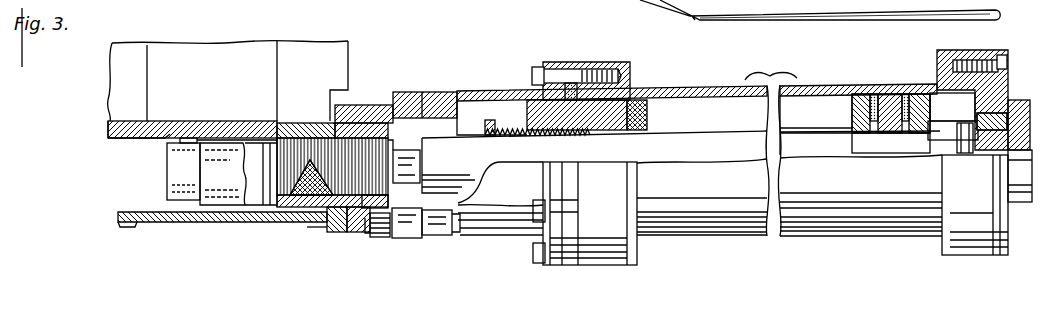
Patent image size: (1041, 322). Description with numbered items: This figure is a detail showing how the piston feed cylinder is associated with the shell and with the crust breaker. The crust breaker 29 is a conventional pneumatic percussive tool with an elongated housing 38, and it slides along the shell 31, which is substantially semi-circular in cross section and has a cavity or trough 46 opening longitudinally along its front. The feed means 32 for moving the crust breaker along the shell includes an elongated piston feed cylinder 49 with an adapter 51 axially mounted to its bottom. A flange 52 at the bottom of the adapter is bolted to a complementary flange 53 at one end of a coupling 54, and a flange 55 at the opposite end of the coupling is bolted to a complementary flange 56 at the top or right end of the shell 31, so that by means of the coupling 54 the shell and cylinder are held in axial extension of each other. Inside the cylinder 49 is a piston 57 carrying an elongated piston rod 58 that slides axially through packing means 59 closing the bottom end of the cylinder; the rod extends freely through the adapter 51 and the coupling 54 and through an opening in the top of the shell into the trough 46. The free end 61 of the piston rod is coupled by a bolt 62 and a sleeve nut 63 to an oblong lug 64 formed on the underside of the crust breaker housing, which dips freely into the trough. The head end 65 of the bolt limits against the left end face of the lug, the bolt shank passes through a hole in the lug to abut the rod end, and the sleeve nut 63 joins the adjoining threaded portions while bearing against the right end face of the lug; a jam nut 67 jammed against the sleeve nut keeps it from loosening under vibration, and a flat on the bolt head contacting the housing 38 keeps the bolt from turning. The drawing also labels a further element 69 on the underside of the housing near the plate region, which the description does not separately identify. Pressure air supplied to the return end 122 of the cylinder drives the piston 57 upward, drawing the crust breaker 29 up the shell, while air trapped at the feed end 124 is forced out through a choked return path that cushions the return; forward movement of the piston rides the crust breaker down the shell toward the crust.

The crust breaker 29 is at (208, 39).
The shell 31 is at (185, 227).
The feed means 32 is at (850, 229).
The elongated housing 38 is at (121, 140).
The cavity or trough 46 is at (141, 198).
The piston feed cylinder 49 is at (828, 85).
The adapter 51 is at (484, 91).
The flange 52 is at (436, 240).
The flange 53 is at (407, 238).
The coupling 54 is at (385, 105).
The flange 55 is at (342, 232).
The flange 56 is at (320, 235).
The piston 57 is at (852, 110).
The piston rod 58 is at (735, 151).
The packing means 59 is at (649, 123).
The free end 61 is at (306, 188).
The bolt 62 is at (268, 122).
The sleeve nut 63 is at (299, 123).
The oblong lug 64 is at (226, 206).
The head end 65 is at (168, 170).
The jam nut 67 is at (375, 105).
The plate 69 is at (179, 121).
The return end 122 is at (607, 100).
The feed end 124 is at (940, 100).